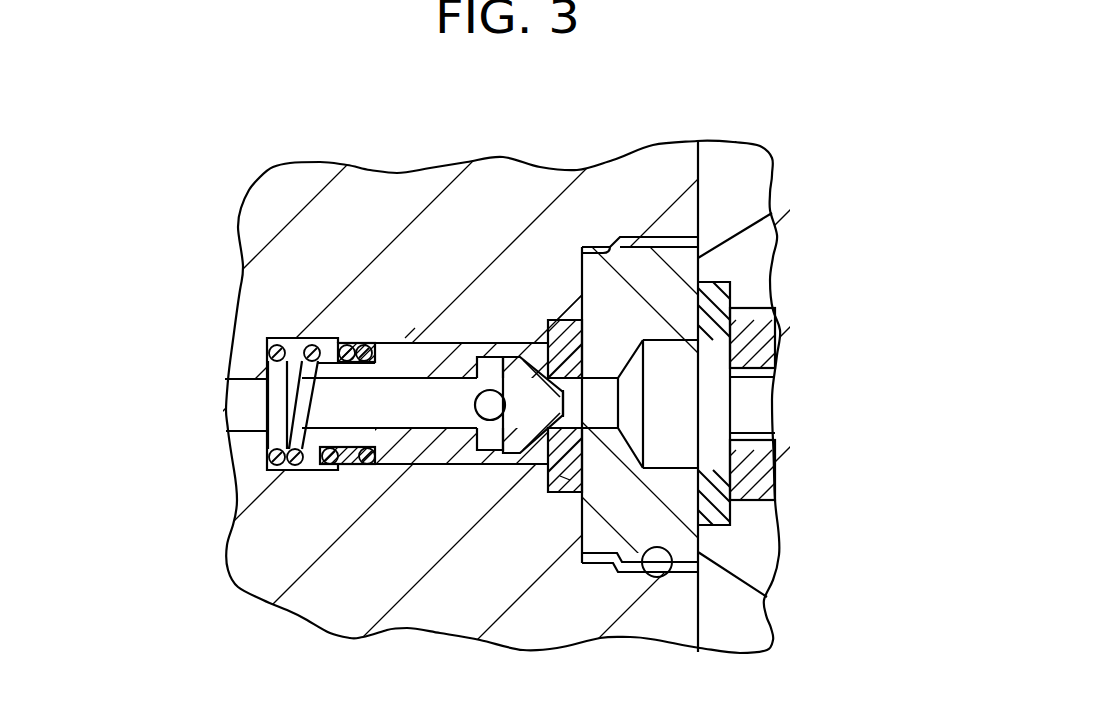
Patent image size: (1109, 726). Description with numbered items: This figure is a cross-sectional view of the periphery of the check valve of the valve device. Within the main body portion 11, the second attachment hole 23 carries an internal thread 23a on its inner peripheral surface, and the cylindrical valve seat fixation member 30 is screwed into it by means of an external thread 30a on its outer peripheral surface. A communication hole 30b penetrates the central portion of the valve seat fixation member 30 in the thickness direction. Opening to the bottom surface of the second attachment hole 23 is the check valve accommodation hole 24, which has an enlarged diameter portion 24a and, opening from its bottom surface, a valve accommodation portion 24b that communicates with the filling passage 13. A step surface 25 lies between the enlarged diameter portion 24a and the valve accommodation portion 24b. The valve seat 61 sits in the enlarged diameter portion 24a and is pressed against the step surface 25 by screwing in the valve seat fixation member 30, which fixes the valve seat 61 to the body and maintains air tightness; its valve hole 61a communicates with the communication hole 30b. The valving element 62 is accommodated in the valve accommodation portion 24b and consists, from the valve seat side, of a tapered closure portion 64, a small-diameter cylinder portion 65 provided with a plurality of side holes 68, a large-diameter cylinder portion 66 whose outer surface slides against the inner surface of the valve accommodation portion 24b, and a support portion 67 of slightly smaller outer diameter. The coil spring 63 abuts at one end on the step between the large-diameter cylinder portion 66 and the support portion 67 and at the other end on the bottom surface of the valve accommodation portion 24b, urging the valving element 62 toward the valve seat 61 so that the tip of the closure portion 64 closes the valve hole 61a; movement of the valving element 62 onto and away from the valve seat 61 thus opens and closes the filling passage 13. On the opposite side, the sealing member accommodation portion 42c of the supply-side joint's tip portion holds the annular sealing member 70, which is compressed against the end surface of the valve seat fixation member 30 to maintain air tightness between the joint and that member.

The main body portion 11 is at (291, 186).
The filling passage 13 is at (240, 424).
The second attachment hole 23 is at (597, 250).
The internal thread 23a is at (666, 570).
The check valve accommodation hole 24 is at (560, 131).
The enlarged diameter portion 24a is at (584, 243).
The valve accommodation portion 24b is at (500, 338).
The step surface 25 is at (565, 479).
The valve seat fixation member 30 is at (633, 257).
The external thread 30a is at (662, 237).
The communication hole 30b is at (632, 418).
The sealing member accommodation portion 42c is at (733, 512).
The valve seat 61 is at (560, 320).
The valve hole 61a is at (600, 378).
The valving element 62 is at (373, 344).
The coil spring 63 is at (282, 338).
The closure portion 64 is at (543, 424).
The small-diameter cylinder portion 65 is at (517, 443).
The large-diameter cylinder portion 66 is at (425, 456).
The support portion 67 is at (314, 452).
The side holes 68 is at (489, 358).
The sealing member 70 is at (713, 278).